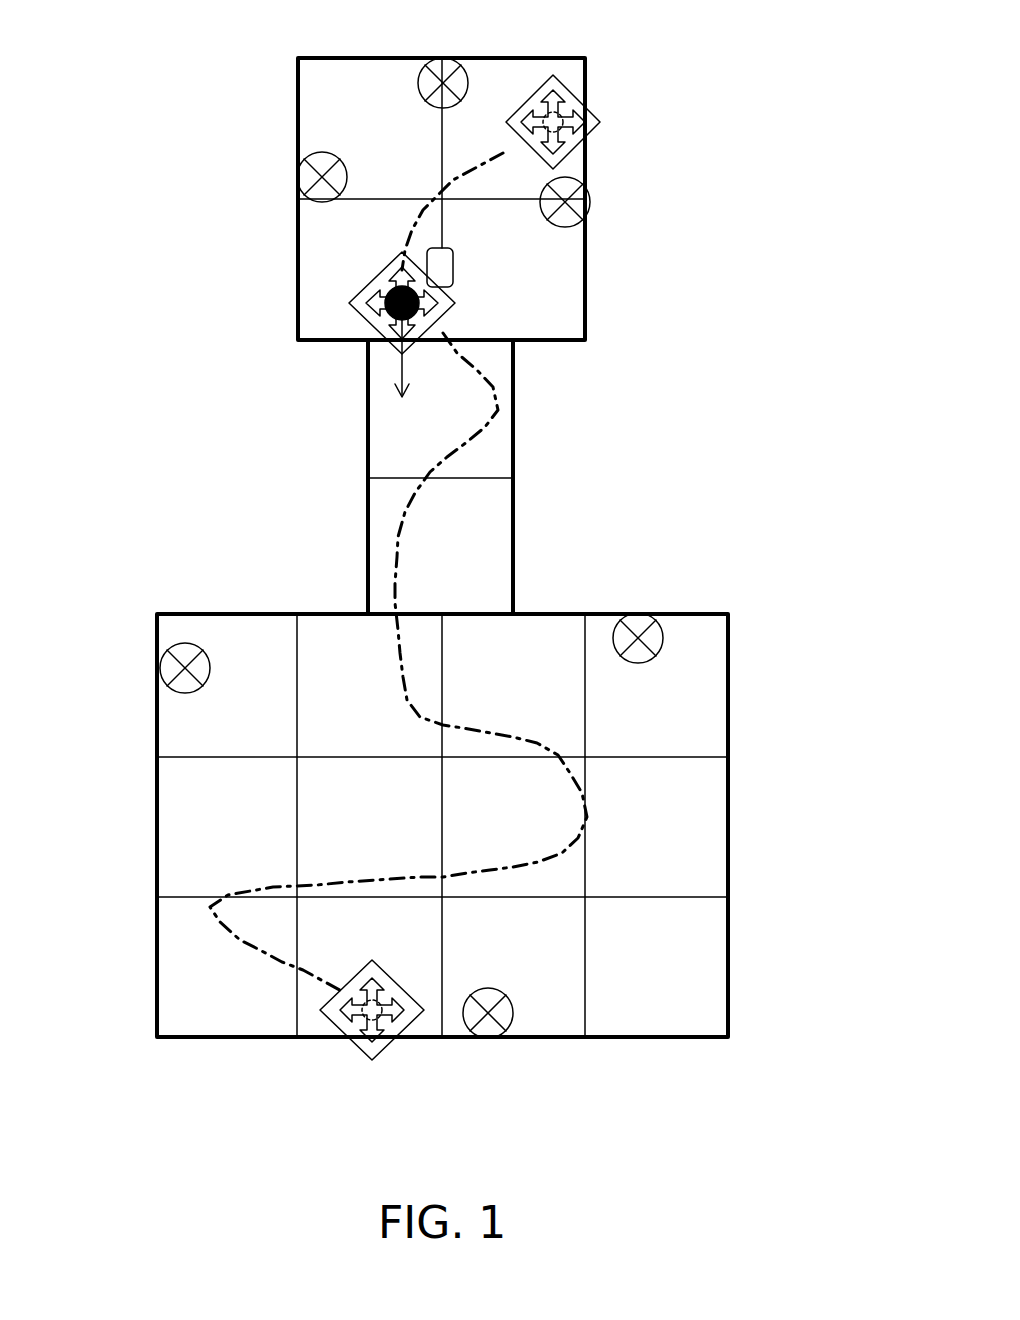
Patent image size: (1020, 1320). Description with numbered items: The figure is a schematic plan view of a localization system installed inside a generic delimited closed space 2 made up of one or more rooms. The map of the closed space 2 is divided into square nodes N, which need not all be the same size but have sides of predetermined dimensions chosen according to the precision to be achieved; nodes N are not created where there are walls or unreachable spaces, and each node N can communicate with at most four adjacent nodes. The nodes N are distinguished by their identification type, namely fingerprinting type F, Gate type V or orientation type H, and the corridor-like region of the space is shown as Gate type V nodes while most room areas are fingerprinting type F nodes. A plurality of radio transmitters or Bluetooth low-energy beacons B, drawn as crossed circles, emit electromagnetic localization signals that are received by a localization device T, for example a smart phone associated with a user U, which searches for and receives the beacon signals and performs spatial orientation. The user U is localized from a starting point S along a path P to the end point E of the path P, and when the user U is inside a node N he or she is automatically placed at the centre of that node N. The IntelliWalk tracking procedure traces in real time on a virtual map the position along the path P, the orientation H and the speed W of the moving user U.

The delimited closed space 2 is at (452, 547).
The fingerprinting type node F is at (442, 547).
The Gate type node V is at (440, 476).
The speed W is at (400, 379).
The radio transmitters B is at (439, 578).
The orientation type node H is at (525, 610).
The starting point S is at (652, 137).
The end point E is at (361, 1071).
The user U is at (358, 325).
The localization device T is at (553, 320).
The path P is at (398, 573).
The nodes N is at (433, 557).